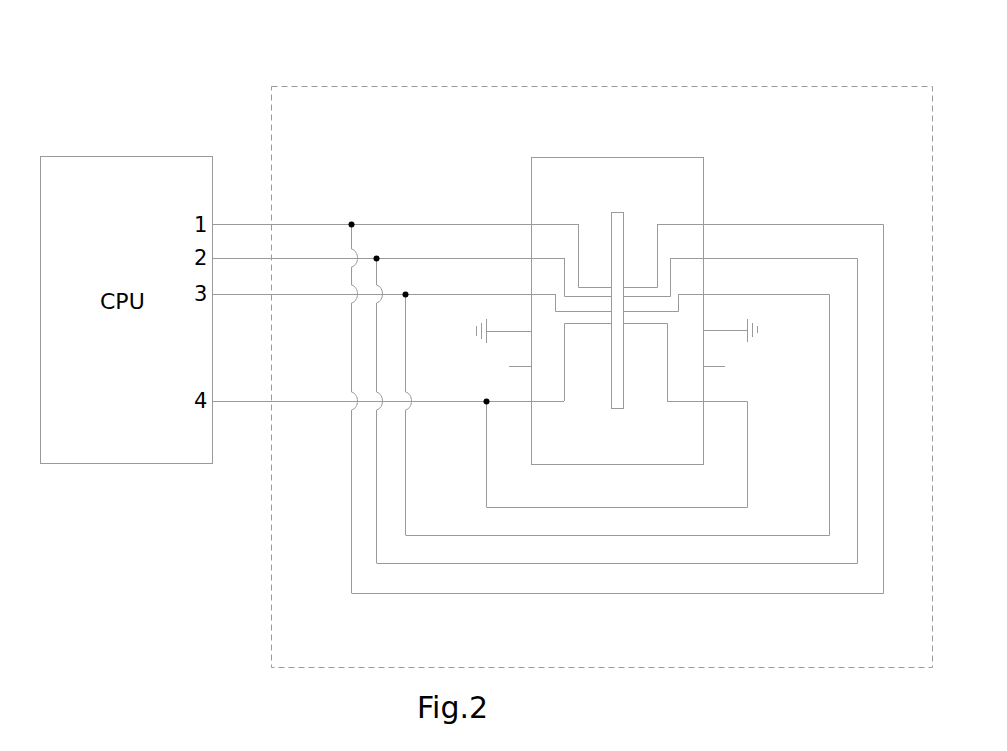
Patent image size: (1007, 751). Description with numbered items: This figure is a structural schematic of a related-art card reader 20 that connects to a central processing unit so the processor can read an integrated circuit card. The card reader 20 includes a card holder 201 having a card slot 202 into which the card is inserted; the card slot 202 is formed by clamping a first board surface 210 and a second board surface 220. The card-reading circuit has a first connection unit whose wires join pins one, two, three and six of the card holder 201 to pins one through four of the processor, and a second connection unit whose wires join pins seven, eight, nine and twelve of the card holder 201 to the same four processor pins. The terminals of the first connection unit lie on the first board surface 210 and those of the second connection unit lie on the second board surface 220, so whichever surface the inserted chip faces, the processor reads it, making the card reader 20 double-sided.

The card reader 20 is at (479, 85).
The card holder 201 is at (703, 175).
The card slot 202 is at (616, 402).
The first board surface 210 is at (611, 226).
The second board surface 220 is at (623, 237).